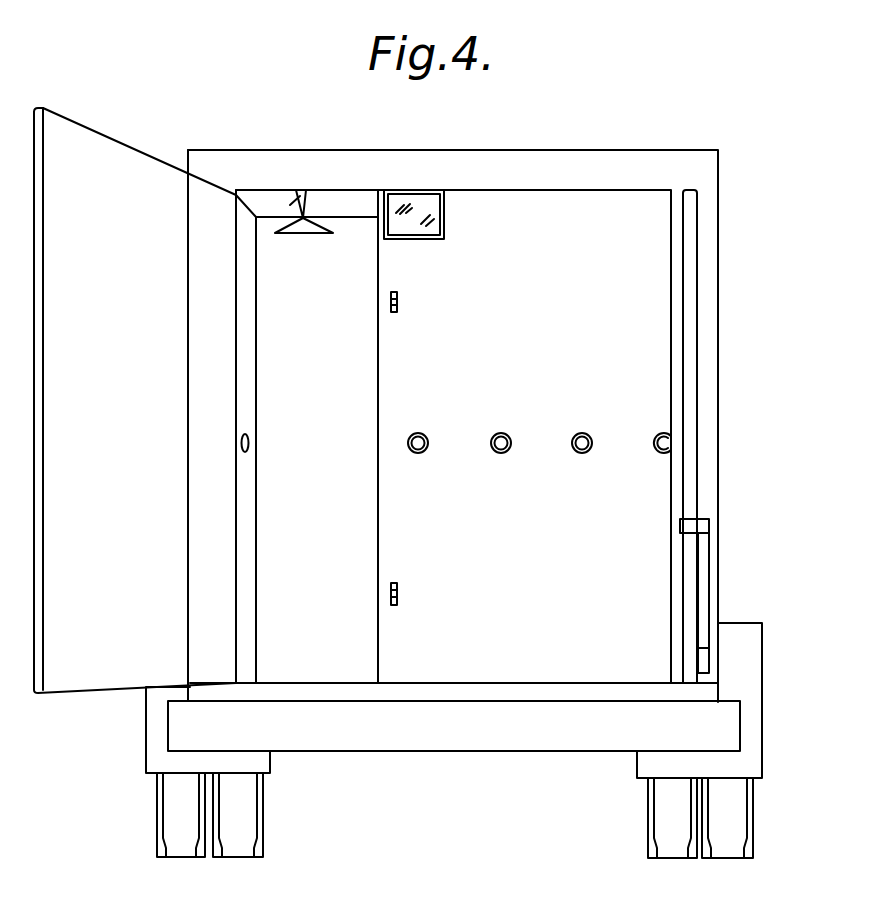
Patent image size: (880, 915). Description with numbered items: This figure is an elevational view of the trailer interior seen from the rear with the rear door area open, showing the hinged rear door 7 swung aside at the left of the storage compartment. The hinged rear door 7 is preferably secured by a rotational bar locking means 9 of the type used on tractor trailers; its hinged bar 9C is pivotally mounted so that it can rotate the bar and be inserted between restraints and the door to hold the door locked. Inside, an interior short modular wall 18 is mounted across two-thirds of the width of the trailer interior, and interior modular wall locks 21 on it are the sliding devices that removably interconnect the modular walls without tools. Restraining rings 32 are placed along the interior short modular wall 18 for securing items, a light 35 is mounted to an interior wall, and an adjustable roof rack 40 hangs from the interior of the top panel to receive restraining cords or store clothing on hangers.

The hinged rear door 7 is at (147, 431).
The rotational bar locking means 9 is at (695, 272).
The hinged bar 9C is at (701, 613).
The interior short modular wall 18 is at (578, 355).
The interior modular wall lock 21 is at (398, 302).
The restraining ring 32 is at (590, 452).
The light 35 is at (432, 240).
The adjustable roof rack 40 is at (303, 215).